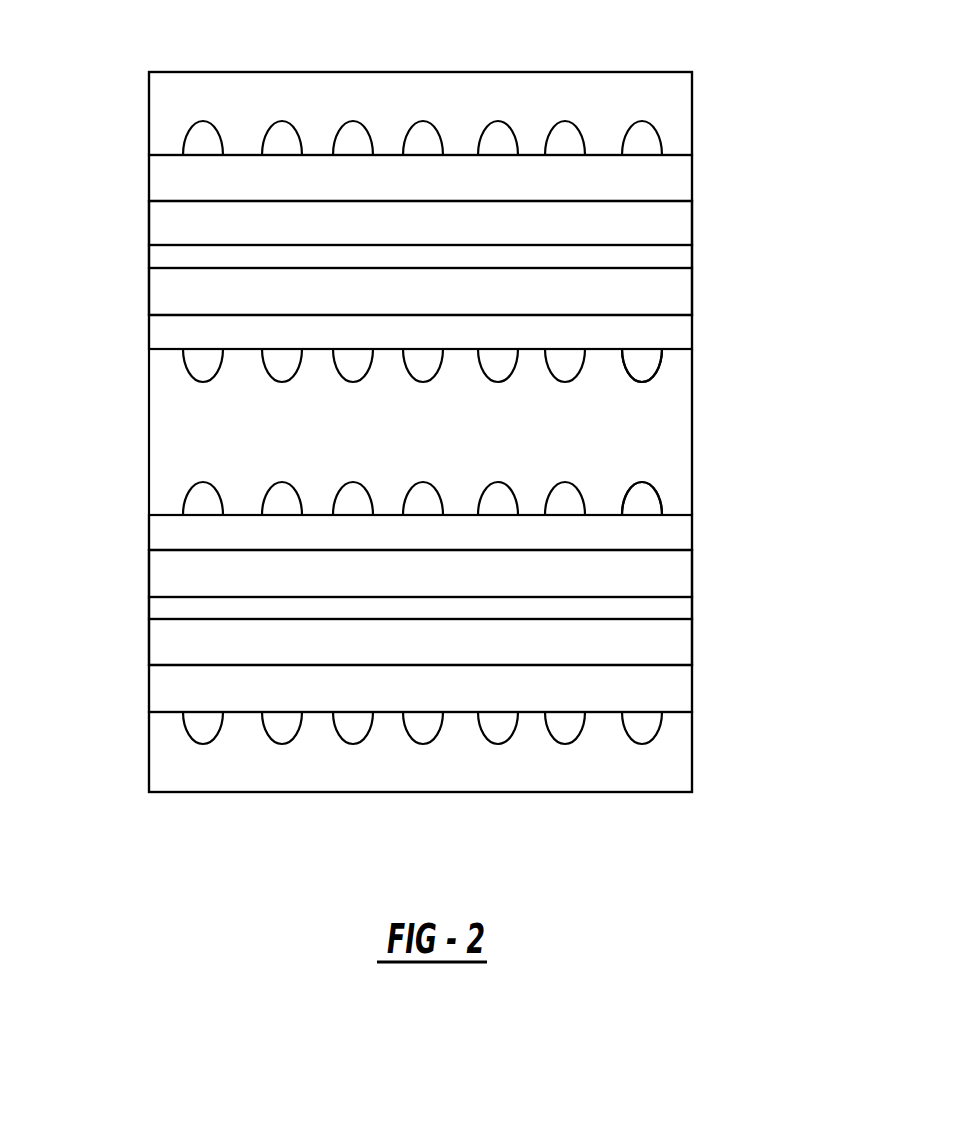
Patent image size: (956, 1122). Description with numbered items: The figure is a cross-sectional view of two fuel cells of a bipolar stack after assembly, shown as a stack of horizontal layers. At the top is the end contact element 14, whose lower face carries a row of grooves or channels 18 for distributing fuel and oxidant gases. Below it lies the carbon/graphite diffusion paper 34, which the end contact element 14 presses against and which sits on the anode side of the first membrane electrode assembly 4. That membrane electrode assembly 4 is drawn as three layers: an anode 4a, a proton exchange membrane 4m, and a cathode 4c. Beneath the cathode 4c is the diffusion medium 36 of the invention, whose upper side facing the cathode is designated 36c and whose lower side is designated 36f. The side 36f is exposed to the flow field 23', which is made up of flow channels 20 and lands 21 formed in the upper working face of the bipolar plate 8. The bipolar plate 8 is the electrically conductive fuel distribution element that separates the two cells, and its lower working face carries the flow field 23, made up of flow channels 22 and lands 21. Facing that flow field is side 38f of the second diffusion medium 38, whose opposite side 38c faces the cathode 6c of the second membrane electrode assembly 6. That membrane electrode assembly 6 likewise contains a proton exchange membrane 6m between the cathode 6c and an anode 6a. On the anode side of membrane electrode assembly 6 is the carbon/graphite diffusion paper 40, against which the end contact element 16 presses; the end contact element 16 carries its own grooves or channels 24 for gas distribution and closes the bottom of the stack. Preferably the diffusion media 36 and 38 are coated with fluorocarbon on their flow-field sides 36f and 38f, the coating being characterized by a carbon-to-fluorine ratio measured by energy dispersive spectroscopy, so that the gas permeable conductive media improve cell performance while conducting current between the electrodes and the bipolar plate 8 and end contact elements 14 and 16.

The end contact element 14 is at (692, 97).
The grooves or channels 18 is at (640, 143).
The carbon/graphite diffusion paper 34 is at (692, 177).
The anode 4a is at (148, 218).
The proton exchange membrane 4m is at (148, 255).
The cathode 4c is at (148, 291).
The membrane electrode assembly 4 is at (703, 203).
The diffusion medium 36 is at (692, 330).
The cathode-facing side of diffusion medium 36c is at (166, 316).
The flow-field-facing side of diffusion medium 36f is at (166, 350).
The flow channels 20 is at (642, 363).
The flow field 23' is at (719, 366).
The bipolar plate 8 is at (692, 433).
The flow channels 22 is at (642, 505).
The flow field 23 is at (726, 490).
The lands 21 is at (608, 155).
The diffusion medium 38 is at (692, 532).
The flow-field-facing side of diffusion medium 38f is at (164, 512).
The cathode-facing side of diffusion medium 38c is at (167, 548).
The cathode 6c is at (148, 580).
The proton exchange membrane 6m is at (148, 606).
The anode 6a is at (148, 640).
The membrane electrode assembly 6 is at (703, 553).
The carbon/graphite diffusion paper 40 is at (692, 690).
The grooves or channels 24 is at (645, 723).
The end contact element 16 is at (692, 767).